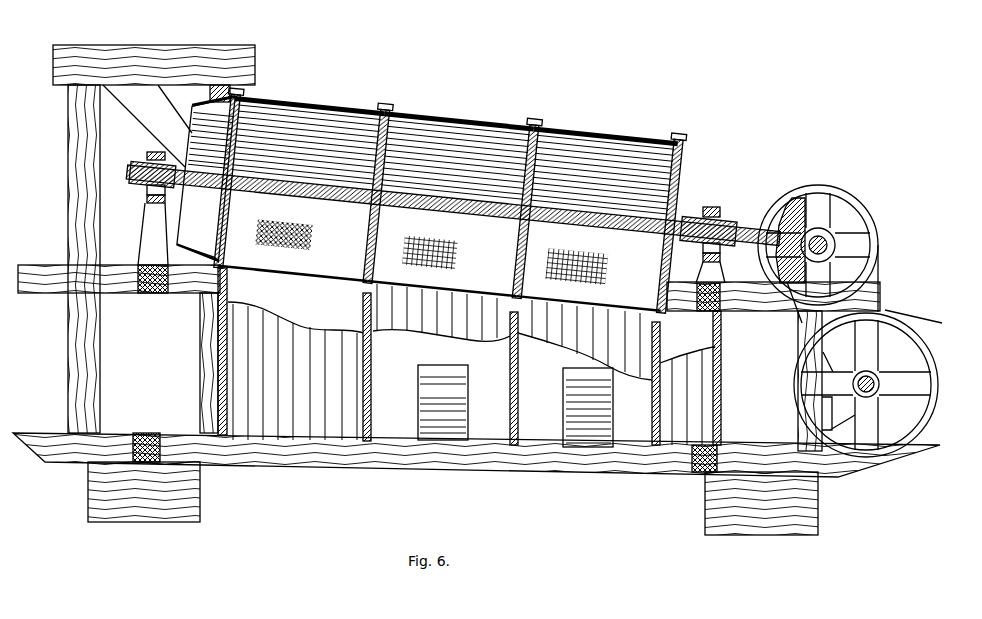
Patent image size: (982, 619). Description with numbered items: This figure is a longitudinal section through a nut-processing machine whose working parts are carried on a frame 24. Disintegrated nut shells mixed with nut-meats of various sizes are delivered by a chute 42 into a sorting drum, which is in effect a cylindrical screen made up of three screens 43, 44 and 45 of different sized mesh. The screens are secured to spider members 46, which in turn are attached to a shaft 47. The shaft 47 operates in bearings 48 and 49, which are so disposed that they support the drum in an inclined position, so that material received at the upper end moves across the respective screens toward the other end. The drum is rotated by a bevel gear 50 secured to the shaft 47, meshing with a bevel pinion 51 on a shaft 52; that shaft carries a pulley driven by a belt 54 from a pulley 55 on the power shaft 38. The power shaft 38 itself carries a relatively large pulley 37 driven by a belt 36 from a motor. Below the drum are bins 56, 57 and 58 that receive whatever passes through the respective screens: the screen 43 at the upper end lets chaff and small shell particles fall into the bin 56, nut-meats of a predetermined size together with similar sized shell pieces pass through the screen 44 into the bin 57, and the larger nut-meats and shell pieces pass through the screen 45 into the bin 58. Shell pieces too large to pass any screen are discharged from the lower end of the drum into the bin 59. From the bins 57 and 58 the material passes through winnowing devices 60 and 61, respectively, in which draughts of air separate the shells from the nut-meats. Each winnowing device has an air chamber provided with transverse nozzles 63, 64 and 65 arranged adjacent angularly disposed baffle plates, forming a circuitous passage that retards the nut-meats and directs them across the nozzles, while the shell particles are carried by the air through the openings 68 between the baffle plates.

The frame 24 is at (100, 347).
The belt 36 is at (914, 308).
The pulley 37 is at (925, 388).
The power shaft 38 is at (874, 391).
The chute 42 is at (152, 116).
The screen 43 is at (303, 103).
The screen 44 is at (458, 122).
The screen 45 is at (588, 130).
The spider members 46 is at (243, 99).
The shaft 47 is at (129, 173).
The bearing 48 is at (722, 212).
The bearing 49 is at (147, 158).
The bevel gear 50 is at (790, 205).
The bevel pinion 51 is at (836, 240).
The shaft 52 is at (832, 248).
The belt 54 is at (878, 268).
The pulley 55 is at (823, 192).
The bin 56 is at (322, 350).
The bin 57 is at (490, 325).
The bin 58 is at (540, 334).
The bin 59 is at (695, 368).
The winnowing device 60 is at (455, 367).
The winnowing device 61 is at (563, 390).
The air nozzle 63 is at (420, 378).
The air nozzle 64 is at (420, 401).
The air nozzle 65 is at (420, 424).
The openings 68 is at (462, 383).